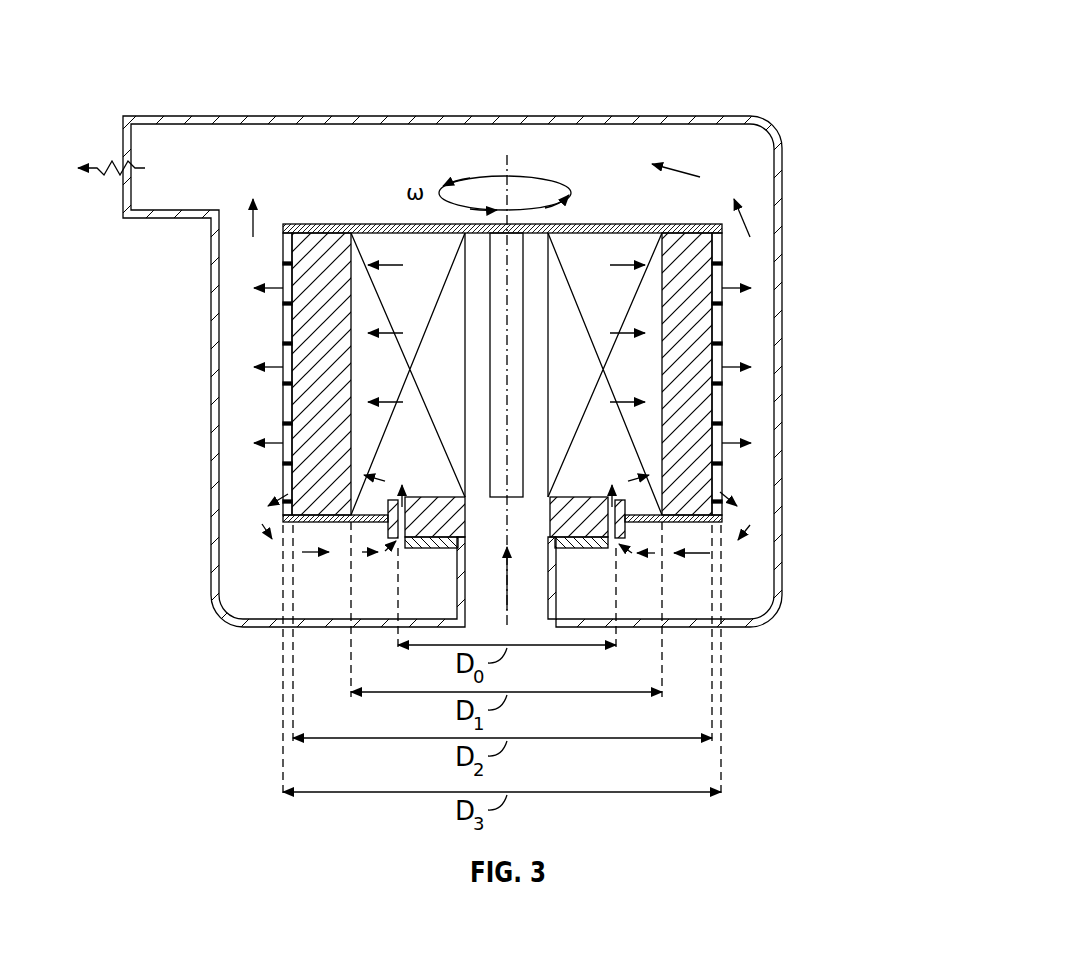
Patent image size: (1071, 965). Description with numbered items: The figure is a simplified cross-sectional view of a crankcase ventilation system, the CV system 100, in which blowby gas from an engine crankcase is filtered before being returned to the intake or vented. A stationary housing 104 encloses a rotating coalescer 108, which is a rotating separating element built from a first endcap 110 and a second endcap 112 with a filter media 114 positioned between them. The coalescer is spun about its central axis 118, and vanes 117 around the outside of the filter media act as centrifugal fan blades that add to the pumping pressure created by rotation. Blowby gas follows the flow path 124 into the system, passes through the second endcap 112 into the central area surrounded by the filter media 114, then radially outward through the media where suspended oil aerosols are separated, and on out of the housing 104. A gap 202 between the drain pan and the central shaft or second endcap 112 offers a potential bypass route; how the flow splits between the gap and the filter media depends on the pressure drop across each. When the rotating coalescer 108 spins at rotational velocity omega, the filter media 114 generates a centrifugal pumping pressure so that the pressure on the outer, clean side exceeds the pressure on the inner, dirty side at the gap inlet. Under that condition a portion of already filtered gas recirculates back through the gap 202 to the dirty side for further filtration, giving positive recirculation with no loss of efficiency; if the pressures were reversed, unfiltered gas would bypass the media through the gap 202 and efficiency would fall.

The CV system 100 is at (219, 42).
The housing 104 is at (176, 116).
The flow path 124 is at (147, 166).
The rotating coalescer 108 is at (240, 285).
The central axis 118 is at (512, 157).
The first endcap 110 is at (628, 224).
The filter media 114 is at (690, 360).
The vanes 117 is at (288, 428).
The gap 202 is at (612, 508).
The second endcap 112 is at (705, 523).